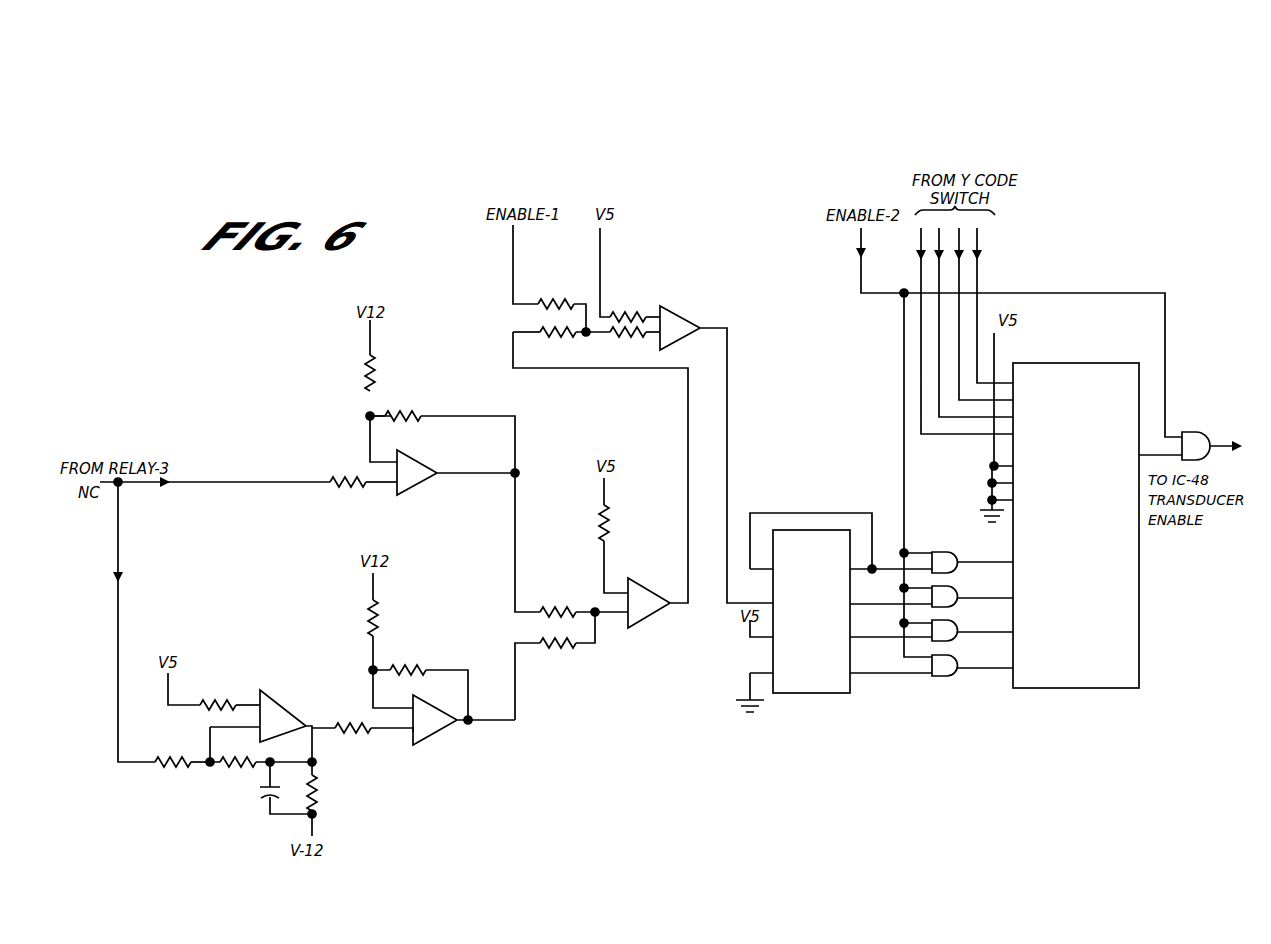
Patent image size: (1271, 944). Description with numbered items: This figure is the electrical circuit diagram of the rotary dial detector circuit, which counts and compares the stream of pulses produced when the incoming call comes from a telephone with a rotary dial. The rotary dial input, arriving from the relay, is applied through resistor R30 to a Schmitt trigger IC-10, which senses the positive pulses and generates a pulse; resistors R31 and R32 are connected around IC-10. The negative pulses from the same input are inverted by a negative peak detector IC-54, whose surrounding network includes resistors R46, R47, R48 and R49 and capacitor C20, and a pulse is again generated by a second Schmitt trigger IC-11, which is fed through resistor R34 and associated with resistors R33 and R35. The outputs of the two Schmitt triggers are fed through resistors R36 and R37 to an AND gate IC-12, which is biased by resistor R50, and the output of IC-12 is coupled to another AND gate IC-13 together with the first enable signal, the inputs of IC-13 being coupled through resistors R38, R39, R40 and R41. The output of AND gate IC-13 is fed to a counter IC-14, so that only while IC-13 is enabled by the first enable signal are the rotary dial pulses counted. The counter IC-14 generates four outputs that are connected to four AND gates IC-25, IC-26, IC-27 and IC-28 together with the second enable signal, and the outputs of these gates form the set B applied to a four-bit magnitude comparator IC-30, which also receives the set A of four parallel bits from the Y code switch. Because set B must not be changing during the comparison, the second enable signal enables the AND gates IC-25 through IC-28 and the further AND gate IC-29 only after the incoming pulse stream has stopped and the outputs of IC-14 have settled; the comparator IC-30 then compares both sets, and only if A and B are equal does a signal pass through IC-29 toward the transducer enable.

The resistor R30 is at (363, 490).
The resistor R31 is at (386, 391).
The resistor R32 is at (442, 442).
The resistor R33 is at (390, 640).
The resistor R34 is at (362, 738).
The resistor R35 is at (420, 684).
The resistor R36 is at (584, 604).
The resistor R37 is at (567, 640).
The resistor R38 is at (562, 308).
The resistor R39 is at (635, 309).
The resistor R40 is at (561, 341).
The resistor R41 is at (635, 341).
The resistor R46 is at (230, 698).
The resistor R47 is at (182, 772).
The resistor R48 is at (261, 773).
The resistor R49 is at (329, 799).
The resistor R50 is at (621, 535).
The capacitor C20 is at (275, 789).
The Schmitt trigger IC-10 is at (430, 483).
The Schmitt trigger IC-11 is at (448, 732).
The AND gate IC-12 is at (650, 614).
The AND gate IC-13 is at (688, 318).
The counter IC-14 is at (800, 695).
The AND gate IC-25 is at (950, 552).
The AND gate IC-26 is at (950, 586).
The AND gate IC-27 is at (950, 620).
The AND gate IC-28 is at (950, 655).
The AND gate IC-29 is at (1232, 424).
The four-bit magnitude comparator IC-30 is at (1139, 629).
The negative peak detector IC-54 is at (283, 698).